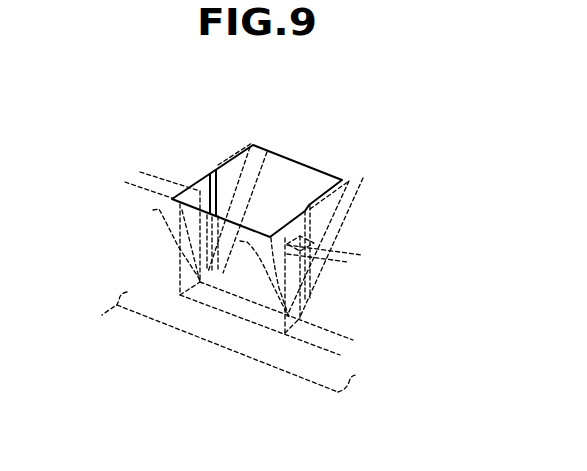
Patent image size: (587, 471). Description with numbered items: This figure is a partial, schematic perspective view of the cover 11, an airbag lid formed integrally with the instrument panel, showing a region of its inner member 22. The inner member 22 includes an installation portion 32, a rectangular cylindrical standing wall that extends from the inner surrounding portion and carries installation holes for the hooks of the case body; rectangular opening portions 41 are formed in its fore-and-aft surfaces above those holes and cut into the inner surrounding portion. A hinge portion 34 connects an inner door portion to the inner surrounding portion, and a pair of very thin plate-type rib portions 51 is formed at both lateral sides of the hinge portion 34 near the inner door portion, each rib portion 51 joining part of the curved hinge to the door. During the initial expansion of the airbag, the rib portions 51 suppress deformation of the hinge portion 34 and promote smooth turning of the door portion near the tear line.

The cover 11 is at (113, 118).
The inner member 22 is at (197, 160).
The hinge portion 34 is at (283, 175).
The rib portion 51 is at (231, 181).
The opening portion 41 is at (232, 315).
The installation portion 32 is at (268, 363).